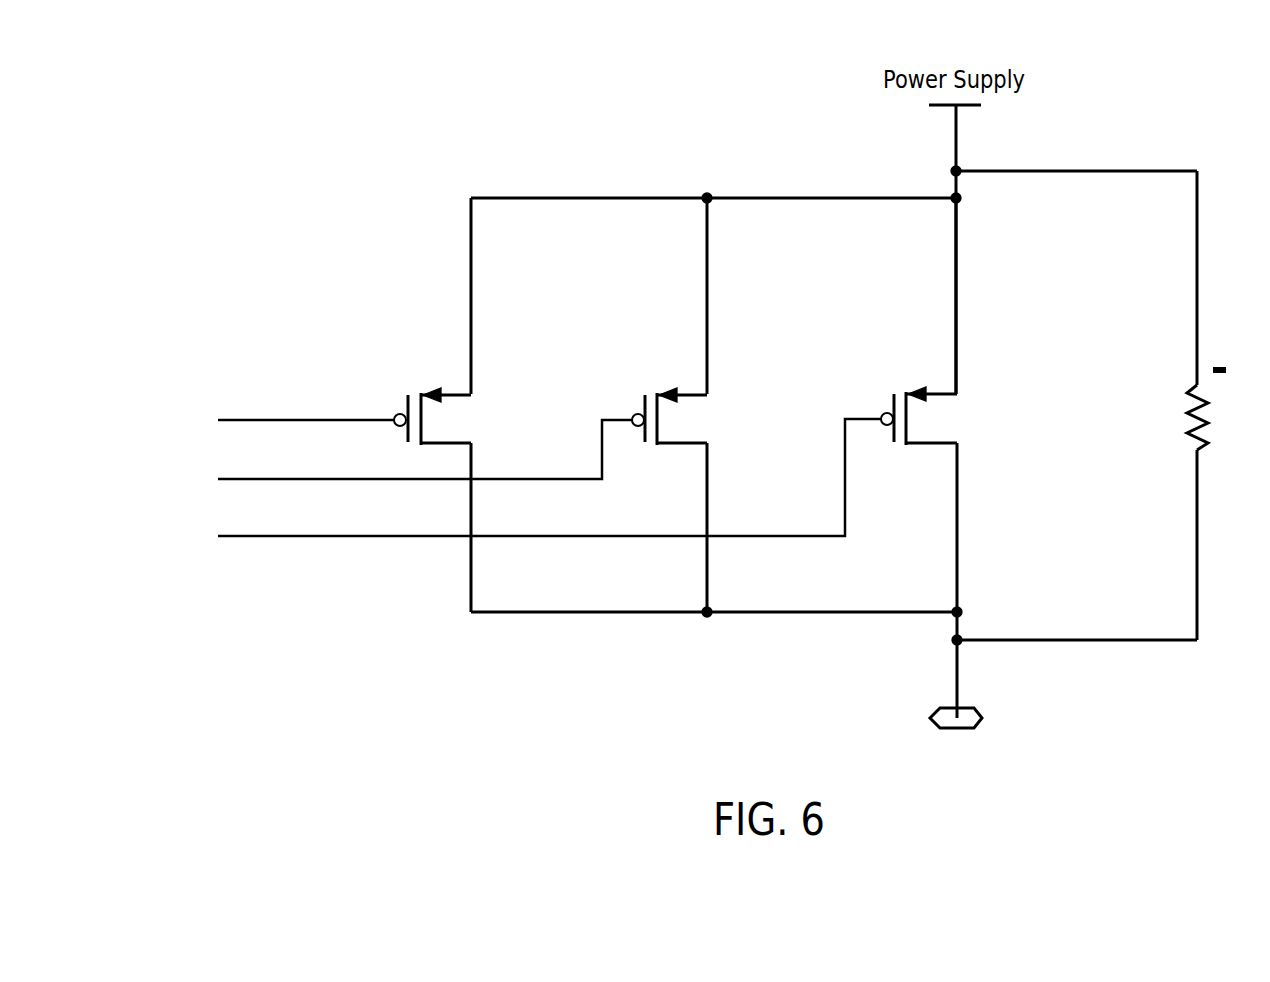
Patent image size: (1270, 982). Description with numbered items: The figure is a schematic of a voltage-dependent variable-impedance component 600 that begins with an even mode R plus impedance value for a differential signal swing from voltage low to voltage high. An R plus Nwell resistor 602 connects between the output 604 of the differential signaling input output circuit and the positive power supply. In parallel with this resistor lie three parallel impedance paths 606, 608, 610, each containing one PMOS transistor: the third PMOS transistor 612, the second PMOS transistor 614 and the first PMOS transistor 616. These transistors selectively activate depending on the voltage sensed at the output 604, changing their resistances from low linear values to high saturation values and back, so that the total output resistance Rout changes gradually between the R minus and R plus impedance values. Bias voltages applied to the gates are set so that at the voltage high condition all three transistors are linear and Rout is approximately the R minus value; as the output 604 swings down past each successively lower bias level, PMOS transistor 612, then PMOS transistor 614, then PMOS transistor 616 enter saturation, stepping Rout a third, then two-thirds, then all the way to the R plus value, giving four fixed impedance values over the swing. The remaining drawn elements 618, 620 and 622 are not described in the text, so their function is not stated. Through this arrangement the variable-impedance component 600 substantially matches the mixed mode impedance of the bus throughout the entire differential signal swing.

The variable-impedance component 600 is at (596, 722).
The R+ Nwell resistor 602 is at (1231, 357).
The output 604 is at (982, 713).
The parallel impedance path 606 is at (485, 250).
The parallel impedance path 608 is at (720, 250).
The parallel impedance path 610 is at (968, 249).
The PMOS transistor M3 612 is at (447, 420).
The PMOS transistor M2 614 is at (690, 418).
The PMOS transistor M1 616 is at (935, 418).
The input V3 618 is at (287, 418).
The input V2 620 is at (284, 478).
The input V1 622 is at (284, 536).